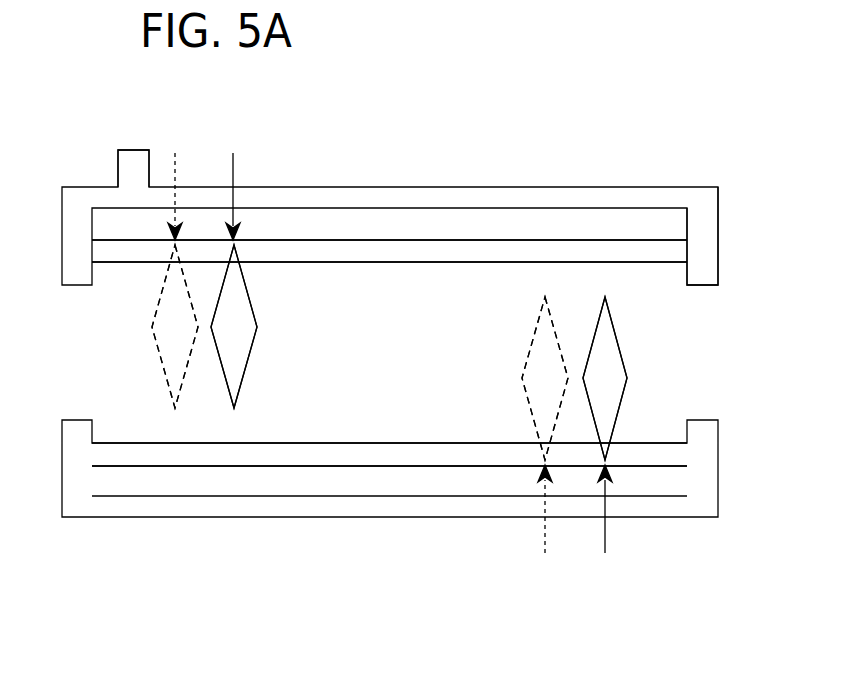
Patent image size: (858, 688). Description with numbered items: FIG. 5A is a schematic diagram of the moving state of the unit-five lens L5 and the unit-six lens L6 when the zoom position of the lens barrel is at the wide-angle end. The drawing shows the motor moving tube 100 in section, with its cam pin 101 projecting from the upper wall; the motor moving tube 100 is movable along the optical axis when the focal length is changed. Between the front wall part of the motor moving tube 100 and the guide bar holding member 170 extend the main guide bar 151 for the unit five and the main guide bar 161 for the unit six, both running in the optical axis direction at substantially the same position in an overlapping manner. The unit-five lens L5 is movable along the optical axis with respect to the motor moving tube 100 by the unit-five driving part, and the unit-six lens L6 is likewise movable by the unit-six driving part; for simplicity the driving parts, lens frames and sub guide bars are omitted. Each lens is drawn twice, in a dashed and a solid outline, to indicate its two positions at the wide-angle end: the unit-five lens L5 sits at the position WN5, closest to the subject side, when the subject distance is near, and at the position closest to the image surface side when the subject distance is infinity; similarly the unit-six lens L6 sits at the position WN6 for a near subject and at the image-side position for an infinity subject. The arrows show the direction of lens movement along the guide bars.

The motor moving tube 100 is at (550, 192).
The cam pin 101 is at (135, 148).
The main guide bar 151 is at (408, 255).
The main guide bar 161 is at (408, 447).
The guide bar holding member 170 is at (710, 250).
The unit-five lens L5 is at (157, 345).
The unit-six lens L6 is at (528, 356).
The position of the unit-five lens in the first state WN5 is at (174, 341).
The position of the unit-six lens in the first state WN6 is at (544, 365).